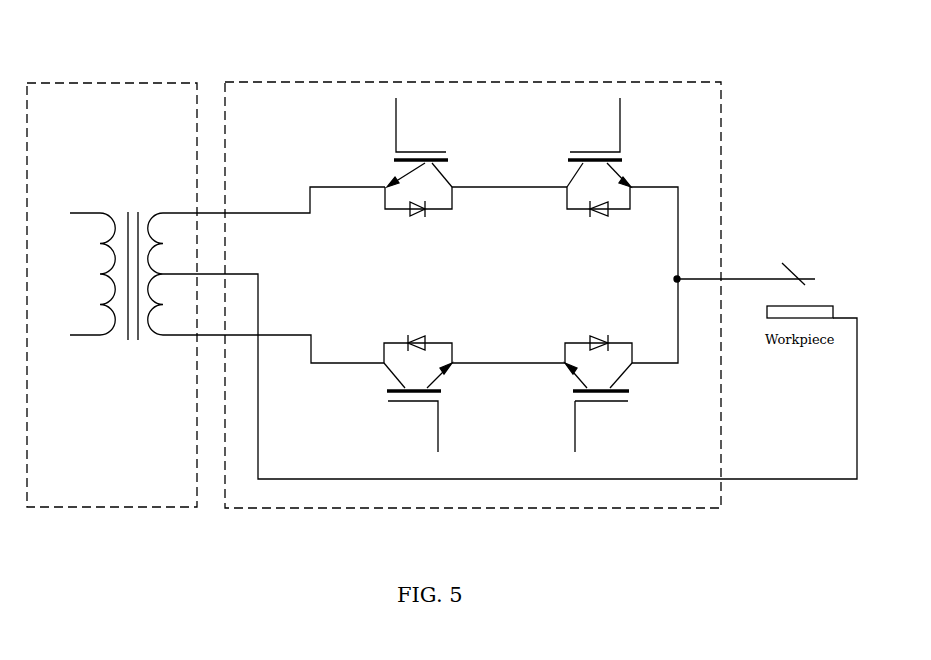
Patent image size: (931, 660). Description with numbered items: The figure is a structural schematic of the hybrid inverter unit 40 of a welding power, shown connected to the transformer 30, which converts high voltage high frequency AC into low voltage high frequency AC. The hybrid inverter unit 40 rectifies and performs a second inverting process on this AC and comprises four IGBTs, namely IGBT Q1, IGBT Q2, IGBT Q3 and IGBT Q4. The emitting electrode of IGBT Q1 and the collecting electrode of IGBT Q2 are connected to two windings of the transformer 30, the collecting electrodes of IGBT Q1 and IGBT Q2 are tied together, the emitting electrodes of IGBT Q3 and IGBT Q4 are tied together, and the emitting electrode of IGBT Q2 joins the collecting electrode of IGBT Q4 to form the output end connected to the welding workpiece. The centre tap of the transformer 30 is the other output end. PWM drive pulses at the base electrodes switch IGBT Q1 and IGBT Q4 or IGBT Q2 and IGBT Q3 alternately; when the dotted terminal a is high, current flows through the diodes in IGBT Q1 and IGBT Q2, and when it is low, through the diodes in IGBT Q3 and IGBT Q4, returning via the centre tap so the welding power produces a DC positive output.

The transformer 30 is at (113, 260).
The hybrid inverter unit 40 is at (473, 261).
The IGBT Q1 is at (418, 157).
The IGBT Q2 is at (616, 157).
The IGBT Q3 is at (418, 393).
The IGBT Q4 is at (598, 393).
The dotted terminal a is at (177, 201).